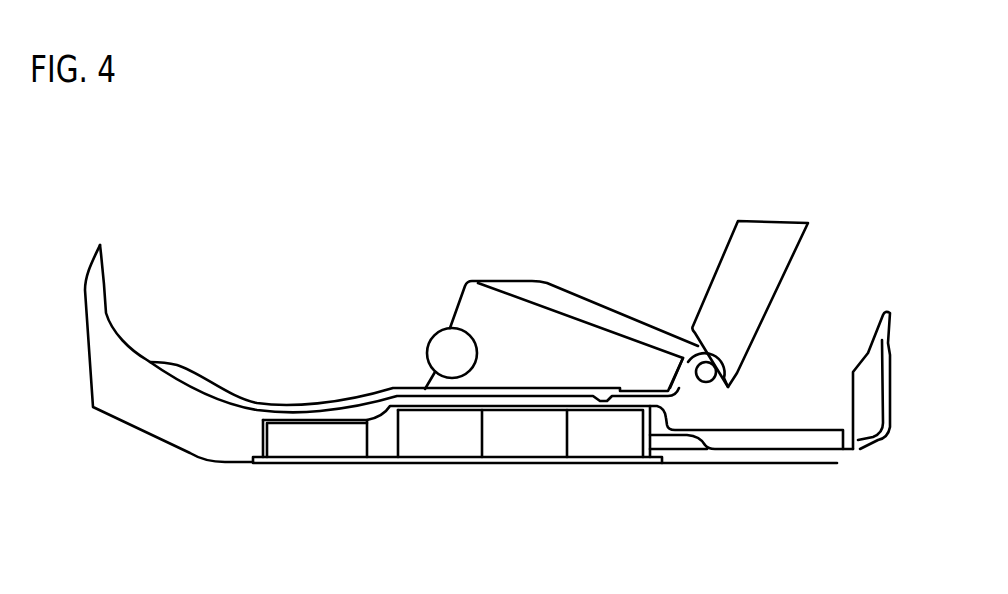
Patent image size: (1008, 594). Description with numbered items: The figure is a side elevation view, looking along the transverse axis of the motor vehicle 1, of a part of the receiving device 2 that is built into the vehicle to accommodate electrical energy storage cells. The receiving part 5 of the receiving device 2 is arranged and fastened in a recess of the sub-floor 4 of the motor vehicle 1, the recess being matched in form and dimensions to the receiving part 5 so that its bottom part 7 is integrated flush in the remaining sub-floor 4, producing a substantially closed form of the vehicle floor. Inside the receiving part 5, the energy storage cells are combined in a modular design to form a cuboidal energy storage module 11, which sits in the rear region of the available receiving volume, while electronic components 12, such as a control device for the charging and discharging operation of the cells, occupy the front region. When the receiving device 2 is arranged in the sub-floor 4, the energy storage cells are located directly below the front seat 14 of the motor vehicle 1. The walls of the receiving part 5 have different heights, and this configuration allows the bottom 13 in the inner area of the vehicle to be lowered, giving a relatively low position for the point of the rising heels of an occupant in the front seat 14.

The motor vehicle 1 is at (278, 249).
The receiving device 2 is at (303, 468).
The sub-floor 4 is at (753, 465).
The receiving part 5 is at (638, 473).
The bottom part 7 is at (443, 463).
The energy storage module 11 is at (425, 433).
The electronic components 12 is at (327, 430).
The bottom 13 is at (263, 403).
The front seat 14 is at (707, 287).